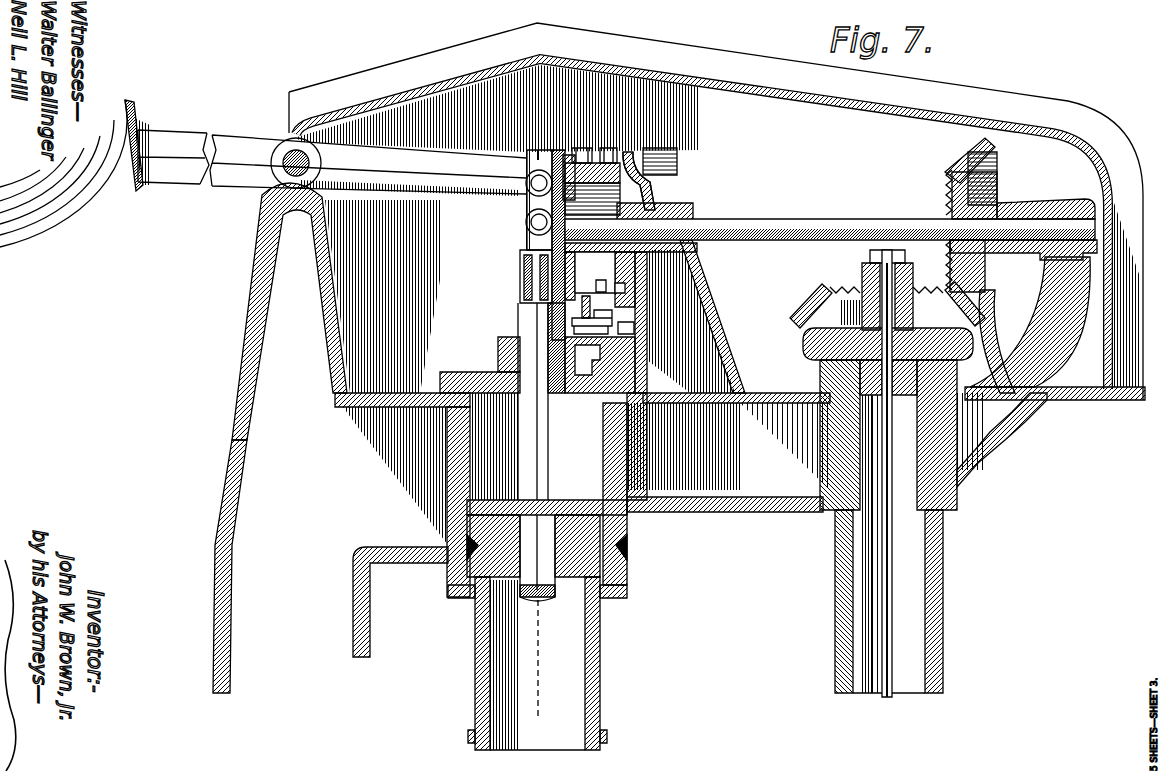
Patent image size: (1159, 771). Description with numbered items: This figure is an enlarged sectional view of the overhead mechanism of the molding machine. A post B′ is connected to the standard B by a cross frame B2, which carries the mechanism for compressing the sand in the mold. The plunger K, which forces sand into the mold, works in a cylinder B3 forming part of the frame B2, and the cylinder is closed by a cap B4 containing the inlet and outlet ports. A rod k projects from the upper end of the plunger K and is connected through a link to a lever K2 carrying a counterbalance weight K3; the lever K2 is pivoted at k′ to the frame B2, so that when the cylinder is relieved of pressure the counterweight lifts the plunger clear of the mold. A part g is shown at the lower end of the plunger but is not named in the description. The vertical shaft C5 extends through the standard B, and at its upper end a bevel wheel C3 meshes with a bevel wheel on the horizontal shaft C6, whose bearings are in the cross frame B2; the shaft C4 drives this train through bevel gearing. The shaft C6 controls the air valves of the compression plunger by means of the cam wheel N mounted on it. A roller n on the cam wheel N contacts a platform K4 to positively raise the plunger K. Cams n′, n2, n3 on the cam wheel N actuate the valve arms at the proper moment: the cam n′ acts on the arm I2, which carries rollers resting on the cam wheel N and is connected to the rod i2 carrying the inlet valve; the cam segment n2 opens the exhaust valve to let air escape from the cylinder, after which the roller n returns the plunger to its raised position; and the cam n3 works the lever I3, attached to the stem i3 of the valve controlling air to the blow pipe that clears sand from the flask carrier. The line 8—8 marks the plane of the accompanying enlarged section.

The counterbalance weight K3 is at (112, 200).
The lever K2 is at (345, 190).
The pivot k' is at (286, 141).
The post B' is at (280, 438).
The cylinder B3 is at (427, 497).
The rod k is at (517, 452).
The platform K4 is at (522, 268).
The plunger K is at (592, 658).
The stem extension g is at (535, 660).
The cross frame B2 is at (756, 495).
The roller n is at (563, 228).
The cam wheel N is at (595, 272).
The cam segment n2 is at (603, 282).
The cam n3 is at (623, 280).
The cam n' is at (561, 319).
The rod i2 is at (603, 319).
The cap B4 is at (594, 350).
The arm I2 is at (592, 168).
The lever I3 is at (655, 170).
The valve stem i3 is at (648, 195).
The section line 8 is at (542, 148).
The horizontal shaft C6 is at (797, 226).
The shaft C4 is at (965, 165).
The bevel wheel C3 is at (812, 290).
The standard B is at (890, 526).
The vertical shaft C5 is at (887, 560).